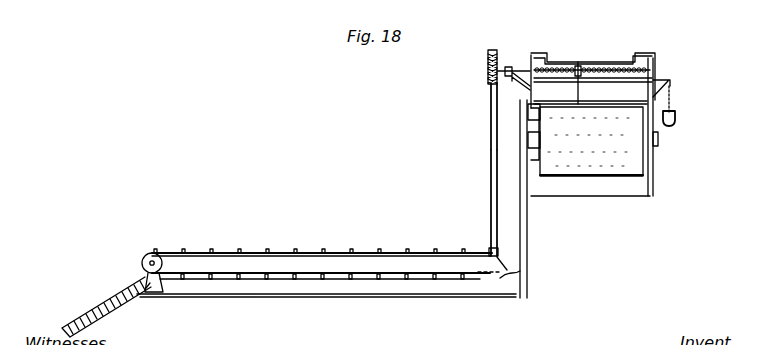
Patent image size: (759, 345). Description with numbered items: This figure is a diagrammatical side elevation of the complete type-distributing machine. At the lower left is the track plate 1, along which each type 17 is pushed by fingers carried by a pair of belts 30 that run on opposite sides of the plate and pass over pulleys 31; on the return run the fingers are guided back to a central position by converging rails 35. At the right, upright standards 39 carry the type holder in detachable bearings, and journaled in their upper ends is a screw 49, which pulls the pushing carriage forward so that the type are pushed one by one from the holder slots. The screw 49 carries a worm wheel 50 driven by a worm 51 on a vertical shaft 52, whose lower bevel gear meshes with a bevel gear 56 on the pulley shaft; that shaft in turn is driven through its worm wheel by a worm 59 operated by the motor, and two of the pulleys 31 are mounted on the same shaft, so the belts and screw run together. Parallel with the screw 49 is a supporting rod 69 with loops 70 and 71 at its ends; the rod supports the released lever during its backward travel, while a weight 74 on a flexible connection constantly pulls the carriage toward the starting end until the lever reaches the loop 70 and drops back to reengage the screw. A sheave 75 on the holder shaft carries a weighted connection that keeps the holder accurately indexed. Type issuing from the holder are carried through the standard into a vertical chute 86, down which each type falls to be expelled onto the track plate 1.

The track plate 1 is at (75, 310).
The type 17 is at (118, 312).
The belts 30 is at (305, 253).
The pulleys 31 is at (141, 263).
The converging rails 35 is at (242, 249).
The standards 39 is at (490, 173).
The screw 49 is at (612, 46).
The worm wheel 50 is at (487, 73).
The worm 51 is at (491, 205).
The shaft 52 is at (490, 112).
The bevel gear 56 is at (590, 168).
The worm 59 is at (667, 127).
The supporting rod 69 is at (600, 66).
The loop 70 is at (651, 53).
The loop 71 is at (539, 53).
The weight 74 is at (683, 106).
The sheave 75 is at (660, 143).
The vertical chute 86 is at (525, 134).